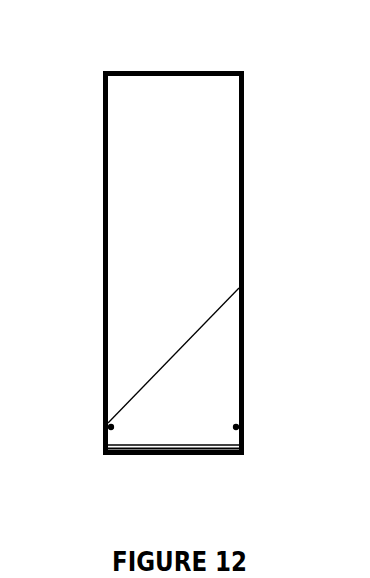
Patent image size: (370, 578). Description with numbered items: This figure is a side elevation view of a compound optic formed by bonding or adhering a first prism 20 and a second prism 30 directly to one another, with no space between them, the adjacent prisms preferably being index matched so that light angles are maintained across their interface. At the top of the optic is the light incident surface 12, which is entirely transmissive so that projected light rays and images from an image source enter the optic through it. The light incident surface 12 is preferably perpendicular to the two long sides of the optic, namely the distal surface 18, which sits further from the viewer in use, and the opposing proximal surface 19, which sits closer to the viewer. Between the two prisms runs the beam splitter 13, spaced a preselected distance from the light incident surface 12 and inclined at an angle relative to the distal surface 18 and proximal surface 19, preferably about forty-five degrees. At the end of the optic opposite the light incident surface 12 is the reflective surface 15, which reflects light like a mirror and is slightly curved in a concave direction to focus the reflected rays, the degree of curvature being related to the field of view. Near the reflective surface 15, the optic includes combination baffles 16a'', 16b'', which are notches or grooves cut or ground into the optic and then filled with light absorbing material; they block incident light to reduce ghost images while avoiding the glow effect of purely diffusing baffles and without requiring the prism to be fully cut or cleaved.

The light incident surface 12 is at (173, 70).
The distal surface 18 is at (102, 160).
The proximal surface 19 is at (245, 145).
The reflective surface 15 is at (180, 455).
The first prism 20 is at (177, 226).
The second prism 30 is at (201, 410).
The beam splitter 13 is at (148, 377).
The combination baffle 16a'' is at (68, 412).
The combination baffle 16b'' is at (285, 415).